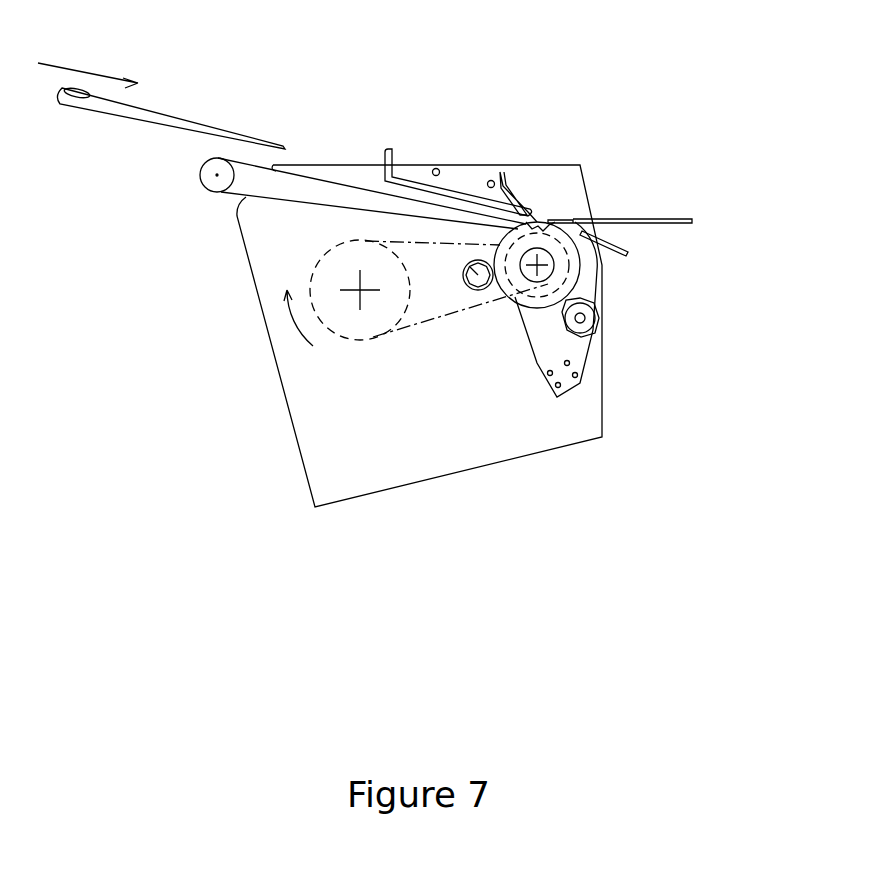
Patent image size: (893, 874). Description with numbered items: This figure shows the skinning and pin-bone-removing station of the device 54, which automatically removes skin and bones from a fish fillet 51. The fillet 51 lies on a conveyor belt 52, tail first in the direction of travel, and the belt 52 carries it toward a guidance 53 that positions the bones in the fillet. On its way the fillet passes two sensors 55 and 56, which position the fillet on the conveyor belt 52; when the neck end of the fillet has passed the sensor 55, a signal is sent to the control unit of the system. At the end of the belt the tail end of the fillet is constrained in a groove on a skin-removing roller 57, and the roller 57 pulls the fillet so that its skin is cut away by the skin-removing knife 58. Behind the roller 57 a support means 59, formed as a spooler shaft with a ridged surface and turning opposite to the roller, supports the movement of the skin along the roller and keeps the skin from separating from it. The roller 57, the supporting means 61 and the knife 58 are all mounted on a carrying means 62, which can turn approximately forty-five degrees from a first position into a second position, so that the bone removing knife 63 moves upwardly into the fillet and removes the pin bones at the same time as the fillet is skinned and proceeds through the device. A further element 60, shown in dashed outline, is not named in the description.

The fish fillet 51 is at (210, 117).
The conveyor belt 52 is at (307, 177).
The guidance 53 is at (387, 150).
The device 54 is at (422, 165).
The sensor 55 is at (440, 172).
The sensor 56 is at (494, 183).
The skin-removing roller 57 is at (540, 221).
The skin-removing knife 58 is at (553, 220).
The support means 59 is at (467, 281).
The drive wheel 60 is at (345, 308).
The supporting means 61 is at (592, 268).
The carrying means 62 is at (553, 353).
The bone removing knife 63 is at (628, 254).